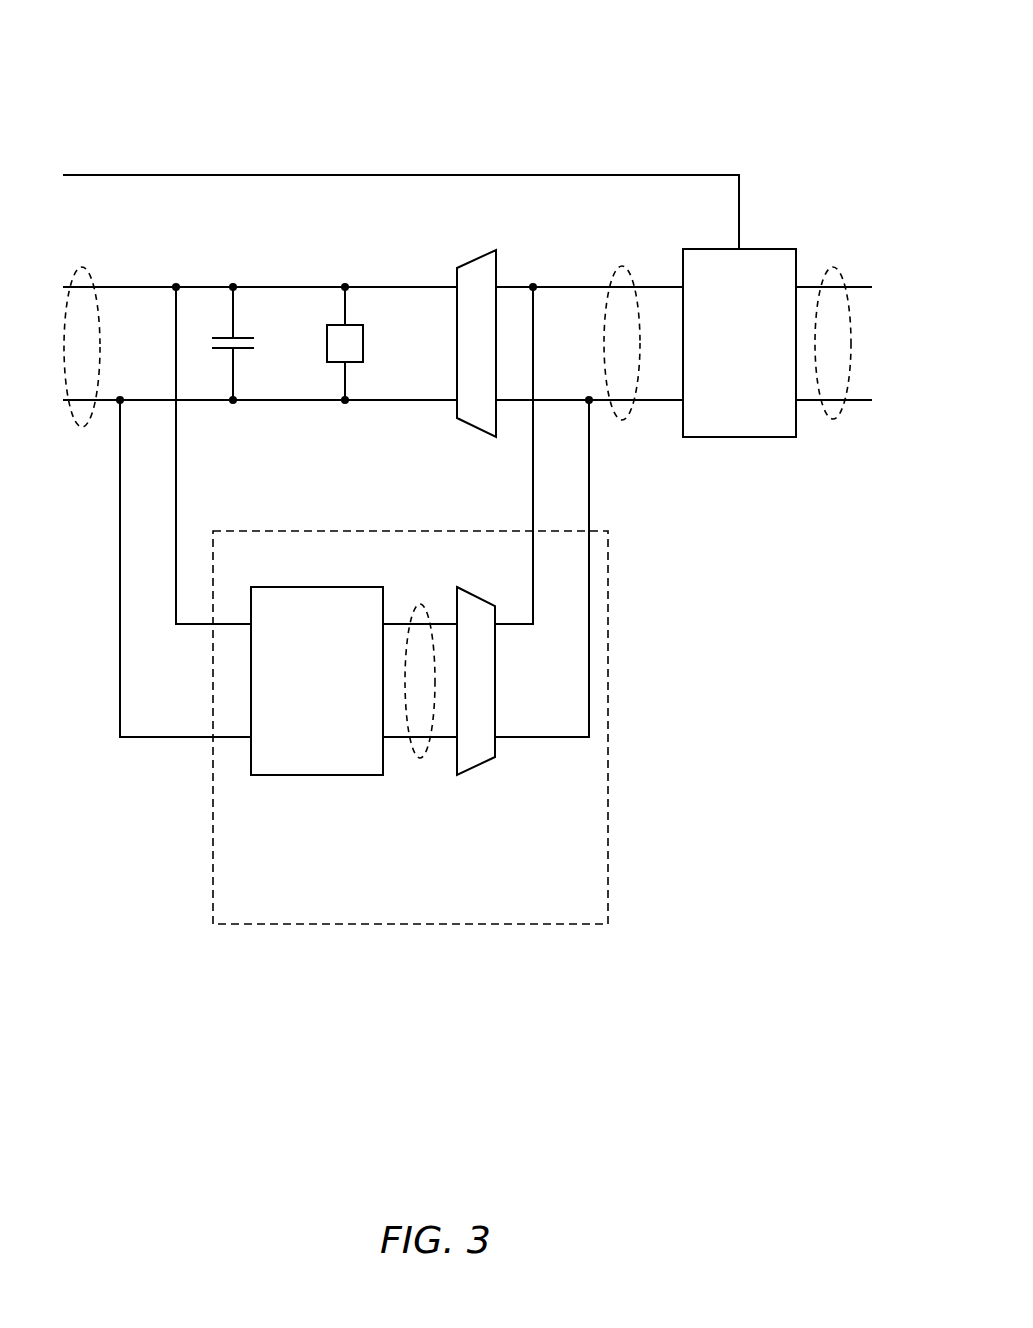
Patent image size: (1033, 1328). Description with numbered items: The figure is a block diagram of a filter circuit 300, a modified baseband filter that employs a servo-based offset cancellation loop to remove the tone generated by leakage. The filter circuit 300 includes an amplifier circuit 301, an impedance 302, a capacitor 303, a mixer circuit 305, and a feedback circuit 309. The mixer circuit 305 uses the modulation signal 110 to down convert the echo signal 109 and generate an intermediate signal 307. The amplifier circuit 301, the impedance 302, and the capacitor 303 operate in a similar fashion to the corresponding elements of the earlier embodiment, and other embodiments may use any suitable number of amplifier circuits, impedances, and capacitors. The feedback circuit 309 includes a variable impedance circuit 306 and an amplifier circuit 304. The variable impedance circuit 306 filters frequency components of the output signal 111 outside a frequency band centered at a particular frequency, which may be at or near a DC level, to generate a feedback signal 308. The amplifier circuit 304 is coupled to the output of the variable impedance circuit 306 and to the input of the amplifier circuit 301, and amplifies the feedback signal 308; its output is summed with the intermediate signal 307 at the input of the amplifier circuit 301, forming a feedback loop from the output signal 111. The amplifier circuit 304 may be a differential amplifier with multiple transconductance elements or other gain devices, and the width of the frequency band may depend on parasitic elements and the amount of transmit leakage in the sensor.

The filter circuit 300 is at (655, 62).
The modulation signal 110 is at (401, 184).
The output signal 111 is at (82, 418).
The capacitor 303 is at (245, 337).
The impedance 302 is at (364, 340).
The amplifier circuit 301 is at (475, 263).
The intermediate signal 307 is at (622, 418).
The mixer circuit 305 is at (720, 384).
The echo signal 109 is at (833, 418).
The feedback circuit 309 is at (609, 793).
The variable impedance circuit 306 is at (297, 717).
The amplifier circuit 304 is at (483, 598).
The feedback signal 308 is at (420, 758).